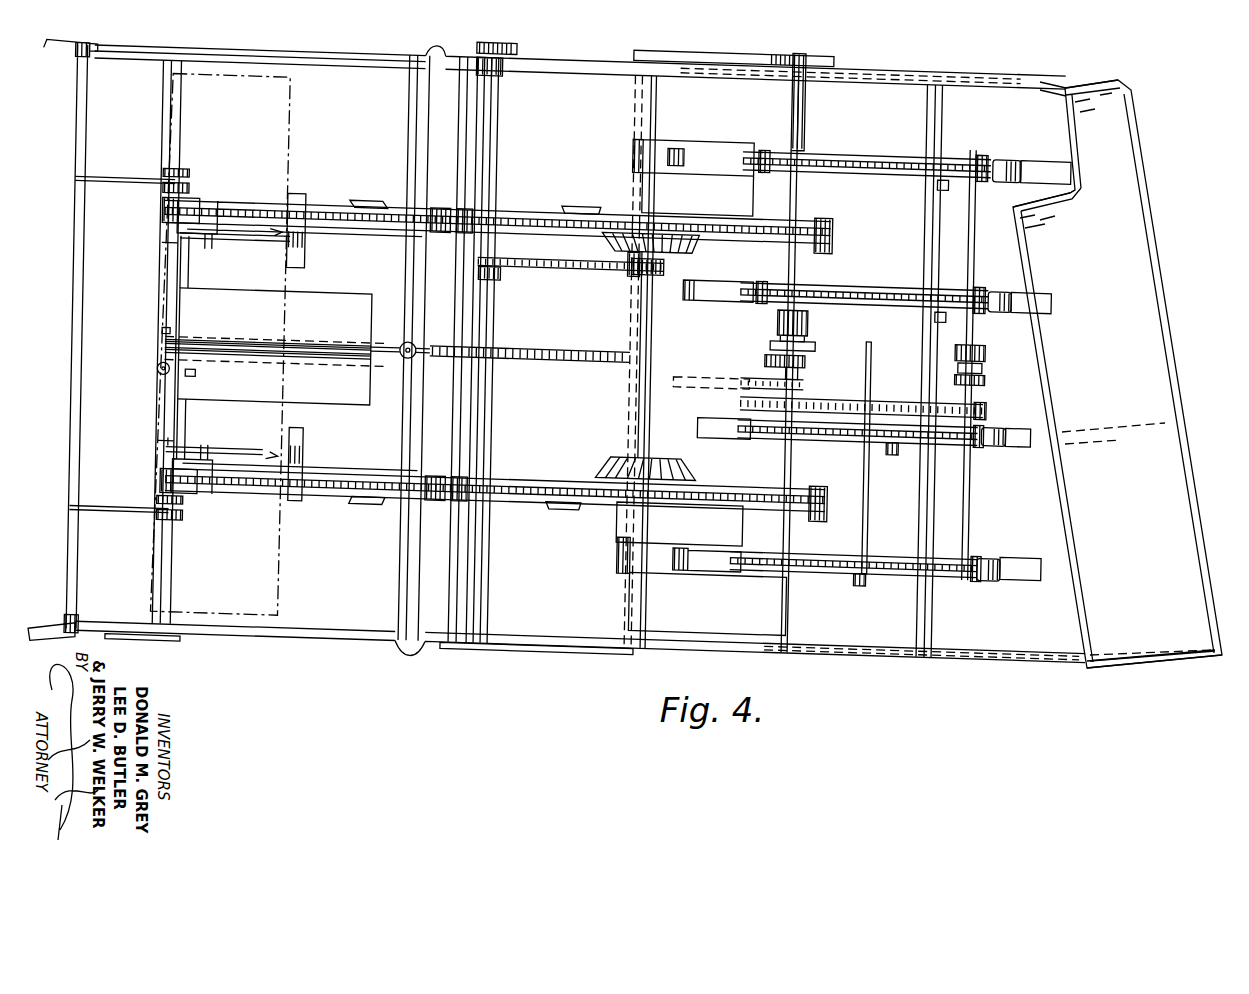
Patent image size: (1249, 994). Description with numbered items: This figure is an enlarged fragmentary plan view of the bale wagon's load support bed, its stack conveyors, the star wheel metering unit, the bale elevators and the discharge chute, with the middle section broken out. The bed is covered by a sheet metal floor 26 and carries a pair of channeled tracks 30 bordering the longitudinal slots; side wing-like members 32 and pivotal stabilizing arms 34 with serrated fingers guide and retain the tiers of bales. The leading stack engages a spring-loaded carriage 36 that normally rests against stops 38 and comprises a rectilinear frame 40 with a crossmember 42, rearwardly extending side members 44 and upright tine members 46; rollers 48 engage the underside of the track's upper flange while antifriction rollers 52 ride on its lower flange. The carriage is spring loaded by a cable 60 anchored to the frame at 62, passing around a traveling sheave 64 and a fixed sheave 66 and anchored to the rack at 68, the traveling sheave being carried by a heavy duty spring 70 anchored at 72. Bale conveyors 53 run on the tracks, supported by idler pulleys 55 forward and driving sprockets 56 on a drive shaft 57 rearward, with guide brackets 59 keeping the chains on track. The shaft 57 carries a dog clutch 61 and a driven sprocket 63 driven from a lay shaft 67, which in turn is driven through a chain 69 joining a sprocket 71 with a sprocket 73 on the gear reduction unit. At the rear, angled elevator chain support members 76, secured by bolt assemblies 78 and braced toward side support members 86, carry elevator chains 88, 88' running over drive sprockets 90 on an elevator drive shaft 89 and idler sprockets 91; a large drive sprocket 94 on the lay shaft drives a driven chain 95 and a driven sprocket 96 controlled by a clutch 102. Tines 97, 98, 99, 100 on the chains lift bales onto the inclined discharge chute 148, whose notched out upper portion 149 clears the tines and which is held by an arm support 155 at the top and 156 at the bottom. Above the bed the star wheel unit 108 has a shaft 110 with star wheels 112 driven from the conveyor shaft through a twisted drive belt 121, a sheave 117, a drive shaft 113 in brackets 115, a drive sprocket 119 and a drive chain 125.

The sheet metal floor 26 is at (253, 345).
The channeled track 30 is at (784, 241).
The side wing-like member 32 is at (73, 66).
The pivotal stabilizing arm 34 is at (110, 194).
The spring-loaded carriage 36 is at (172, 421).
The stop 38 is at (170, 257).
The rectilinear frame 40 is at (180, 272).
The crossmember 42 is at (189, 296).
The side member 44 is at (230, 252).
The tine member 46 is at (305, 255).
The roller 48 is at (205, 261).
The antifriction roller 52 is at (272, 242).
The bale conveyor 53 is at (392, 207).
The idler pulley 55 is at (170, 222).
The driving sprocket 56 is at (824, 223).
The drive shaft 57 is at (794, 445).
The guide bracket 59 is at (367, 206).
The cable 60 is at (385, 348).
The dog clutch 61 is at (818, 320).
The cable anchor 62 is at (165, 345).
The driven sprocket 63 is at (806, 356).
The traveling sheave 64 is at (401, 364).
The fixed sheave 66 is at (160, 382).
The lay shaft 67 is at (775, 347).
The rack anchor 68 is at (196, 387).
The chain 69 is at (799, 374).
The heavy duty spring 70 is at (489, 374).
The sprocket 71 is at (680, 384).
The spring anchor 72 is at (626, 334).
The sprocket 73 is at (819, 379).
The elevator chain support member 76 is at (867, 150).
The bolt assembly 78 is at (920, 526).
The side support member 86 is at (877, 667).
The elevator chain 88 is at (881, 521).
The elevator chain 88' is at (835, 229).
The elevator drive shaft 89 is at (972, 232).
The drive sprocket 90 is at (989, 141).
The idler sprocket 91 is at (732, 559).
The drive sprocket 94 is at (746, 395).
The driven chain 95 is at (887, 458).
The driven sprocket 96 is at (986, 397).
The tine 97 is at (675, 559).
The tine 98 is at (702, 424).
The tine 99 is at (705, 288).
The tine 100 is at (697, 153).
The clutch 102 is at (991, 351).
The star wheel unit 108 is at (593, 461).
The shaft 110 is at (652, 325).
The star wheel 112 is at (694, 248).
The drive shaft 113 is at (496, 154).
The bracket 115 is at (495, 74).
The sheave 117 is at (507, 48).
The drive sprocket 119 is at (501, 264).
The drive belt 121 is at (724, 51).
The drive chain 125 is at (571, 268).
The discharge chute 148 is at (1163, 318).
The notched out upper portion 149 is at (1075, 186).
The arm support 155 is at (1044, 86).
The arm support 156 is at (1050, 660).